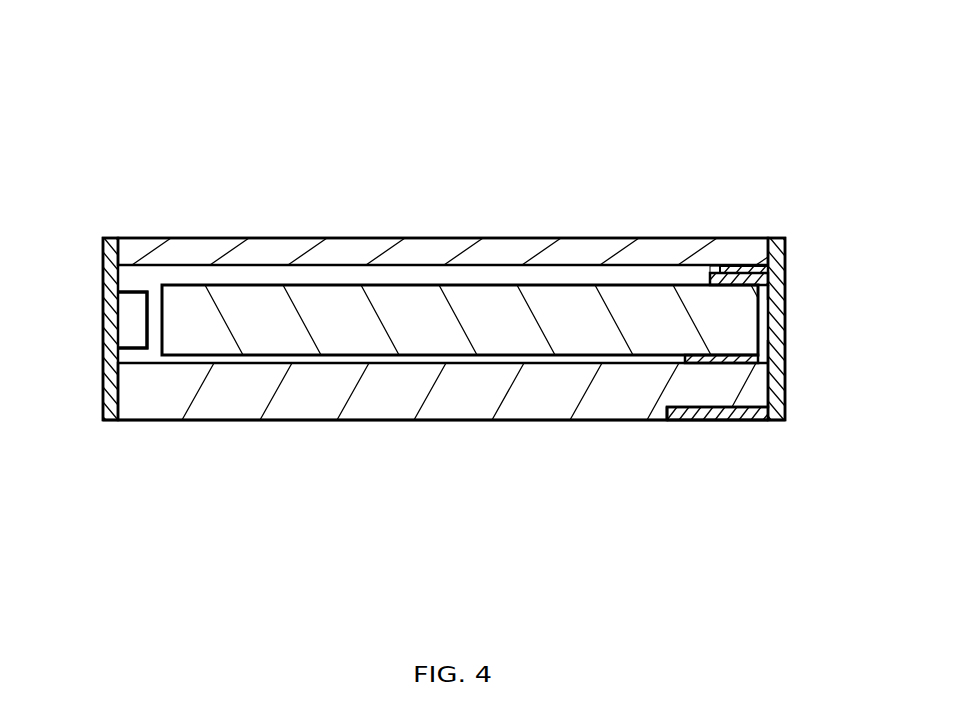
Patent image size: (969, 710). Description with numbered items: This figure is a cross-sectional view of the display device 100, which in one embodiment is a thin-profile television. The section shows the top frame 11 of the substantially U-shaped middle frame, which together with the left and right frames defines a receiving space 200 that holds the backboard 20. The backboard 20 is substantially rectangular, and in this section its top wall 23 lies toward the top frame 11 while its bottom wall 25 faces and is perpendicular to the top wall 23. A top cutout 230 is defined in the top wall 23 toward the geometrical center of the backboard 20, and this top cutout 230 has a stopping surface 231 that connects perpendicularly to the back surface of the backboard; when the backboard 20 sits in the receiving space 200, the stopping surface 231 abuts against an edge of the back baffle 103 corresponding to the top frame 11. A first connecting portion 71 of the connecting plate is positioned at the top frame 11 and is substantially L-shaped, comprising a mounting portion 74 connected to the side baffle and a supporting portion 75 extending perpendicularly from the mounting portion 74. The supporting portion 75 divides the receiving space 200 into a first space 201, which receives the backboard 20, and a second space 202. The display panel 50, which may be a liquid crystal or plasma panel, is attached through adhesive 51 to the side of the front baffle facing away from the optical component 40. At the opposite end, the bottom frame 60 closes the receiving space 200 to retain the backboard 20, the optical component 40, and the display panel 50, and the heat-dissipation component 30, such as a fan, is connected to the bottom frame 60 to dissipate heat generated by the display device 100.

The display device 100 is at (186, 72).
The bottom wall 25 is at (112, 389).
The top wall 23 is at (774, 386).
The mounting portion 74 is at (770, 292).
The top frame 11 is at (770, 352).
The display panel 50 is at (585, 248).
The adhesive 51 is at (728, 268).
The supporting portion 75 is at (727, 353).
The first connecting portion 71 is at (857, 273).
The optical component 40 is at (490, 315).
The heat-dissipation component 30 is at (130, 318).
The bottom frame 60 is at (115, 330).
The backboard 20 is at (388, 405).
The first space 201 is at (463, 410).
The second space 202 is at (529, 334).
The receiving space 200 is at (570, 480).
The top cutout 230 is at (749, 416).
The stopping surface 231 is at (662, 419).
The back baffle 103 is at (700, 422).